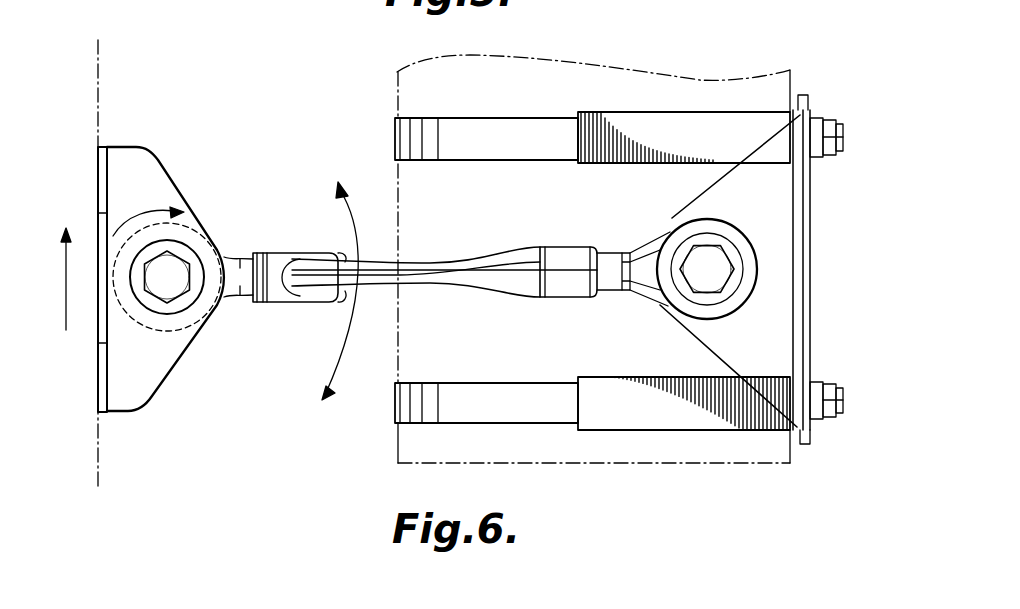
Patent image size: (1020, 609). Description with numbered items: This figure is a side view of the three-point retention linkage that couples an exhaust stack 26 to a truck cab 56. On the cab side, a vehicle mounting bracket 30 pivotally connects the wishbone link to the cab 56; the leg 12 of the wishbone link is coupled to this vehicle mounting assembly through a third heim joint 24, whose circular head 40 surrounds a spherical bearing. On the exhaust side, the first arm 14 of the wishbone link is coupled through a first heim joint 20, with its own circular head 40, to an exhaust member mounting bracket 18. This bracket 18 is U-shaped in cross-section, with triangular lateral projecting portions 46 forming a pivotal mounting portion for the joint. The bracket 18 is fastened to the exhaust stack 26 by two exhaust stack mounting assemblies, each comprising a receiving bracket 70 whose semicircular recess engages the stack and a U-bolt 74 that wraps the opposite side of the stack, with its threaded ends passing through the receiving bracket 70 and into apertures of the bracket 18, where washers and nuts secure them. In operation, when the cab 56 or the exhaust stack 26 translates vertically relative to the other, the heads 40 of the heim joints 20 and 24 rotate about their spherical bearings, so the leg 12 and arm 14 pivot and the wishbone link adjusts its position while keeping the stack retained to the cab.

The leg 12 is at (287, 308).
The first arm 14 is at (408, 288).
The exhaust member mounting bracket 18 is at (818, 114).
The first heim joint 20 is at (745, 311).
The third heim joint 24 is at (224, 232).
The exhaust stack 26 is at (728, 80).
The vehicle mounting bracket 30 is at (162, 141).
The circular head 40 is at (190, 316).
The lateral projecting portions 46 is at (763, 232).
The truck cab 56 is at (64, 254).
The receiving bracket 70 is at (632, 113).
The U-bolt 74 is at (522, 118).